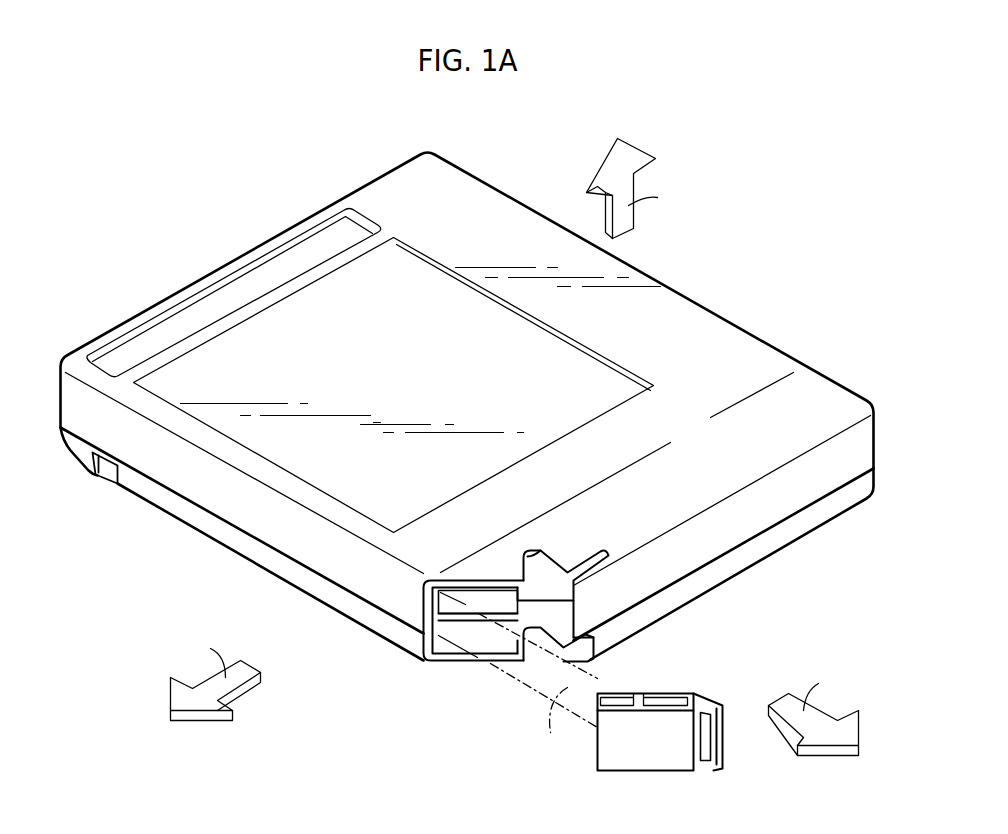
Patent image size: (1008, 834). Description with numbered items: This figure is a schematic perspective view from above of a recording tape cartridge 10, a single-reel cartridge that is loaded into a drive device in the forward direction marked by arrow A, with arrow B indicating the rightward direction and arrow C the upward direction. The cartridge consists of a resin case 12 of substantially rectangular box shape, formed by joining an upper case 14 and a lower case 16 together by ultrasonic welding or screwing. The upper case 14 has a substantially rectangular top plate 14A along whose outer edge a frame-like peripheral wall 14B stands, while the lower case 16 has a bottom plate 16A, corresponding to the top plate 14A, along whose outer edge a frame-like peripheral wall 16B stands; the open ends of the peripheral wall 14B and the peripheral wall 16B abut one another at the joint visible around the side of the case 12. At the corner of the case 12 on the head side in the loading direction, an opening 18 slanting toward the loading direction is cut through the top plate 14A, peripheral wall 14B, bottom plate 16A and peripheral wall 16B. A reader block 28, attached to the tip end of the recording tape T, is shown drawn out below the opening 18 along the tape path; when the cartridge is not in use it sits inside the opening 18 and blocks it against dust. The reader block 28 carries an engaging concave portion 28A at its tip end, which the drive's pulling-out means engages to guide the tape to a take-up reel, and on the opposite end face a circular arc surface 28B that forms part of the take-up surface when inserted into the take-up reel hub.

The recording tape cartridge 10 is at (678, 245).
The case 12 is at (822, 557).
The upper case 14 is at (722, 533).
The top plate 14A is at (750, 355).
The peripheral wall 14B is at (307, 543).
The lower case 16 is at (720, 574).
The bottom plate 16A is at (450, 653).
The peripheral wall 16B is at (337, 600).
The opening 18 is at (487, 597).
The reader block 28 is at (646, 780).
The engaging concave portion 28A is at (705, 757).
The circular arc surface 28B is at (598, 695).